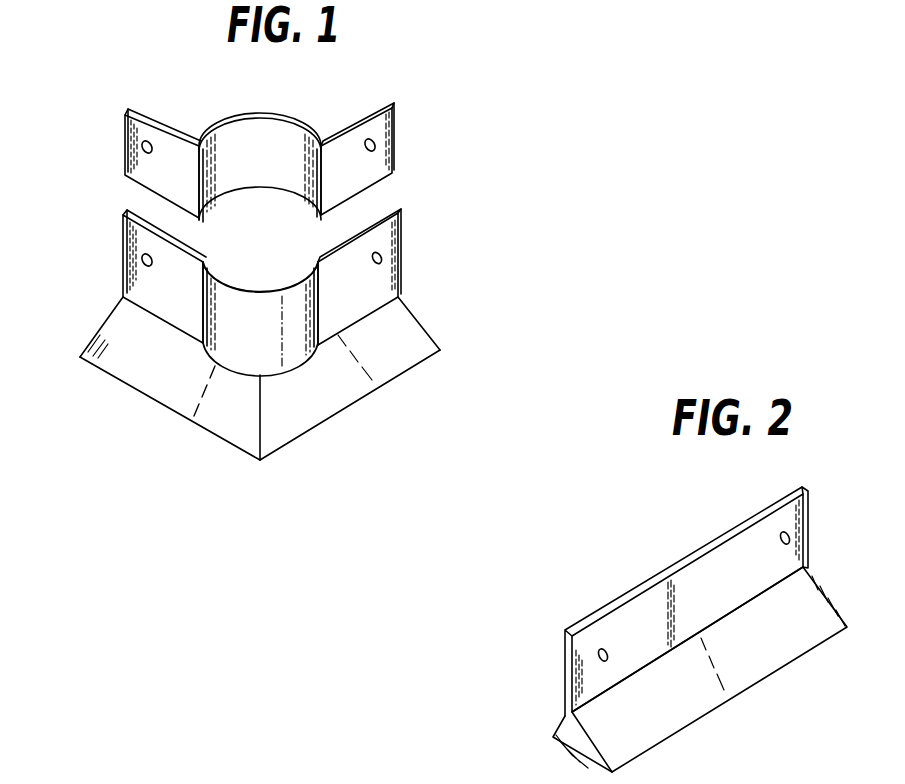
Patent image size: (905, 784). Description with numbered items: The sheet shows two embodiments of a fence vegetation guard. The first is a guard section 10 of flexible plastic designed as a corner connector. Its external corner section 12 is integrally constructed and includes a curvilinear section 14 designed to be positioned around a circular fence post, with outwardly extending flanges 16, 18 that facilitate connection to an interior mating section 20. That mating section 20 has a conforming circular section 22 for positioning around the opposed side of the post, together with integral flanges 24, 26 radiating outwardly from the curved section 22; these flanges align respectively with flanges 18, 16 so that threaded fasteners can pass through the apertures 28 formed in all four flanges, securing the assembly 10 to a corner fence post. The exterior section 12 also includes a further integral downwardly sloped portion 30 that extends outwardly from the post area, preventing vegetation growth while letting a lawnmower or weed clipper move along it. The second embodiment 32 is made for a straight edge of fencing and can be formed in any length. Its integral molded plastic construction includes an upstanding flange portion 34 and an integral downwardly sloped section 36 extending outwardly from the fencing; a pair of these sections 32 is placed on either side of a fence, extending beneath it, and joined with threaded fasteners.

In FIG. 1, the guard section 10 is at (530, 189).
In FIG. 1, the external corner section 12 is at (393, 366).
In FIG. 1, the curvilinear section 14 is at (290, 360).
In FIG. 1, the flange 16 is at (398, 211).
In FIG. 1, the flange 18 is at (120, 248).
In FIG. 1, the interior mating section 20 is at (318, 117).
In FIG. 1, the circular section 22 is at (210, 124).
In FIG. 1, the flange 24 is at (121, 119).
In FIG. 1, the flange 26 is at (398, 161).
In FIG. 1, the aperture 28 is at (382, 255).
In FIG. 1, the downwardly sloped portion 30 is at (177, 392).
In FIG. 2, the modified embodiment 32 is at (525, 671).
In FIG. 2, the upstanding flange portion 34 is at (690, 577).
In FIG. 2, the downwardly sloped section 36 is at (758, 664).